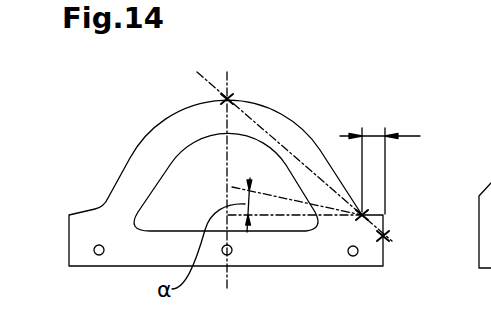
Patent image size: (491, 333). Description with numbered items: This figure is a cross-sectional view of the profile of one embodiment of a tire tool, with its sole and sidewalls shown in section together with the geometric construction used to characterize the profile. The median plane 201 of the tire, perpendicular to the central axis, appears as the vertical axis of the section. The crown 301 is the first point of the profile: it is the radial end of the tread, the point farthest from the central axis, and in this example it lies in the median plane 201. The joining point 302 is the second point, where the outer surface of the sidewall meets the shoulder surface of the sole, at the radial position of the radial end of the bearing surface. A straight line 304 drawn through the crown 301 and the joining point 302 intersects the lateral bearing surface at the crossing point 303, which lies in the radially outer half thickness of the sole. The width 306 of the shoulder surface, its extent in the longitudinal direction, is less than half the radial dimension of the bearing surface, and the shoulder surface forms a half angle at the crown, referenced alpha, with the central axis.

The median plane 201 is at (228, 175).
The crown 301 is at (229, 97).
The joining point 302 is at (360, 219).
The crossing point 303 is at (388, 236).
The straight line 304 is at (260, 128).
The width of the shoulder surface 306 is at (410, 136).